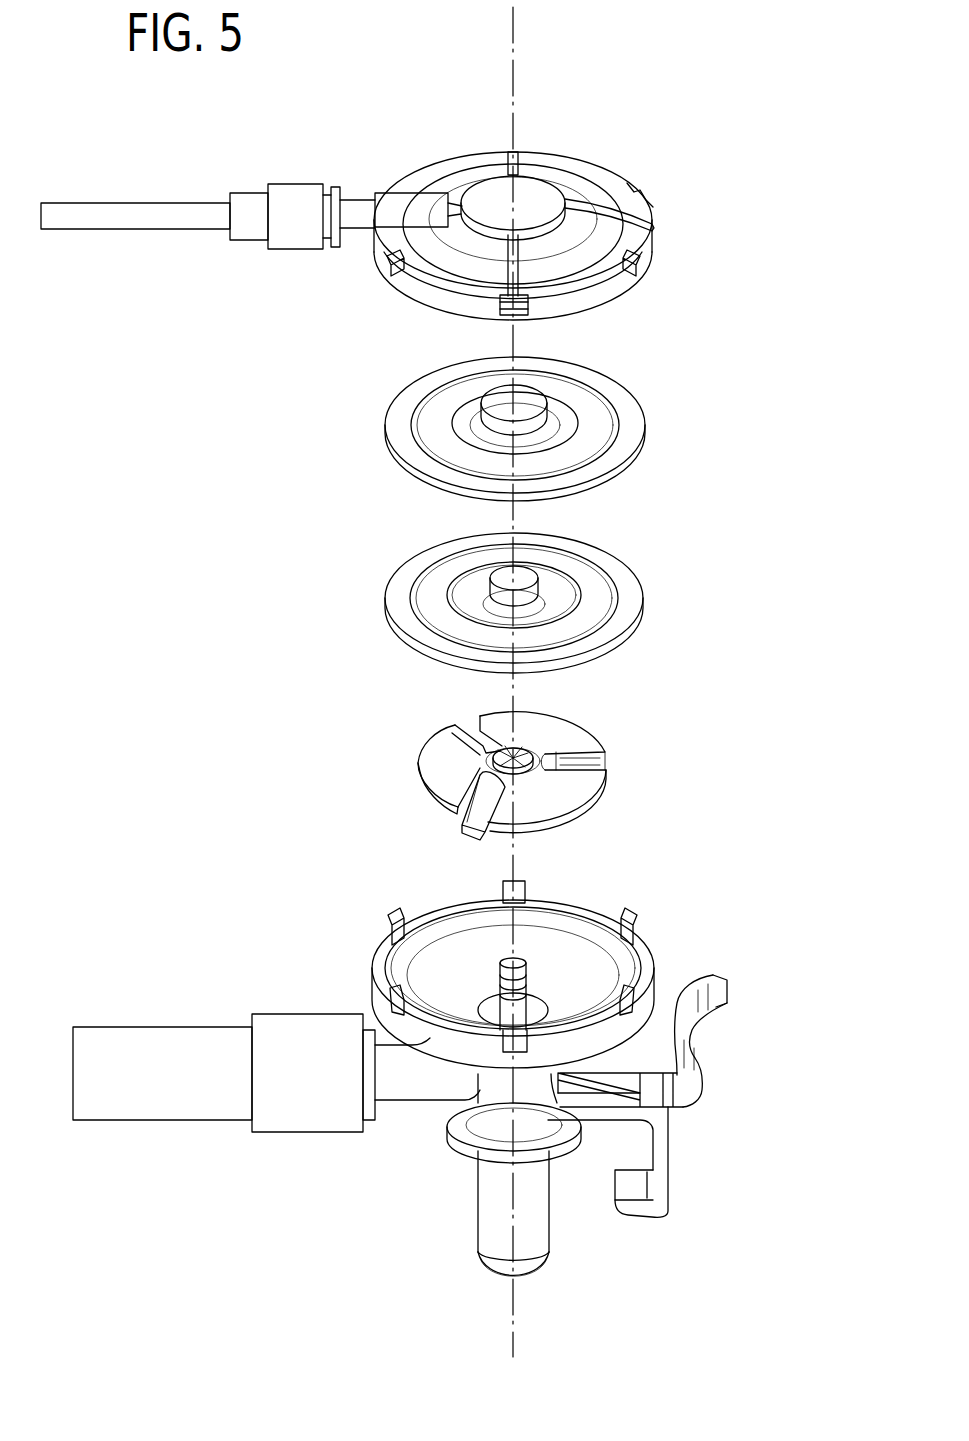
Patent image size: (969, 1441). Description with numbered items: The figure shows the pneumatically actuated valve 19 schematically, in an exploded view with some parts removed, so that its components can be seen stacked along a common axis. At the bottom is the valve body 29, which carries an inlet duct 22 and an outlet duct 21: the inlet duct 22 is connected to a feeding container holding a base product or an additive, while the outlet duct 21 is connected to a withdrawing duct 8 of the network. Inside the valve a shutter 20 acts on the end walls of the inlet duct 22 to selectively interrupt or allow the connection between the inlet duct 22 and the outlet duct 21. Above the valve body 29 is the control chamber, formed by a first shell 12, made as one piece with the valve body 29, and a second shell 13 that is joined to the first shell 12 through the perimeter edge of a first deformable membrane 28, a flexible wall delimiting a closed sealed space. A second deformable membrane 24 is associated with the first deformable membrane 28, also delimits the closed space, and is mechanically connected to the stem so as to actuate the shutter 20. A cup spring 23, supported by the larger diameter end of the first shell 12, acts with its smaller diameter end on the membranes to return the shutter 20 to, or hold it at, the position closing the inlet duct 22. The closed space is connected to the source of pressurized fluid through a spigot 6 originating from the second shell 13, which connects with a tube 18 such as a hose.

The pneumatically actuated valve 19 is at (707, 110).
The tube 18 is at (175, 217).
The spigot 6 is at (361, 208).
The second shell 13 is at (591, 186).
The second deformable membrane 24 is at (617, 393).
The first deformable membrane 28 is at (622, 578).
The cup spring 23 is at (575, 741).
The first shell 12 is at (604, 922).
The withdrawing duct 8 is at (165, 1100).
The outlet duct 21 is at (419, 1090).
The valve body 29 is at (507, 1118).
The inlet duct 22 is at (523, 1222).
The shutter 20 is at (525, 1268).